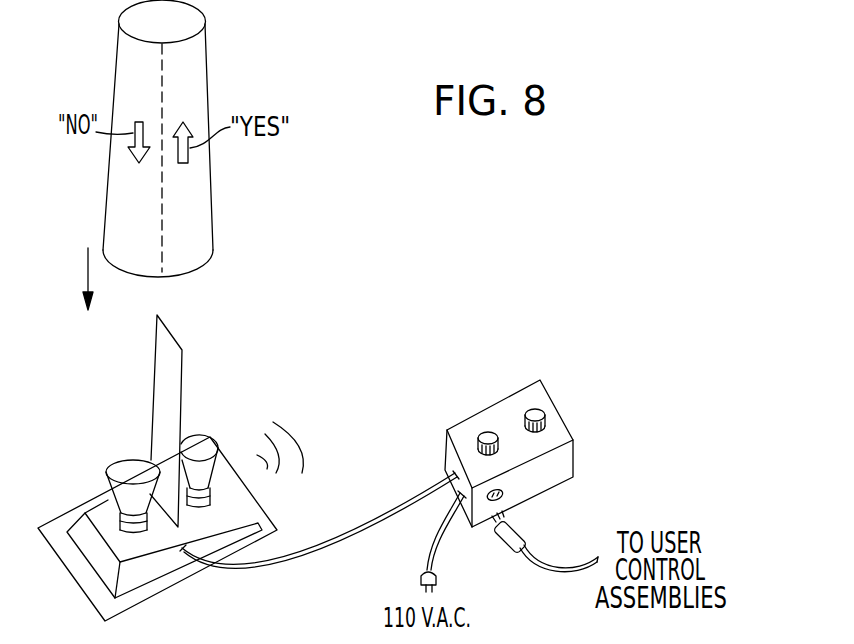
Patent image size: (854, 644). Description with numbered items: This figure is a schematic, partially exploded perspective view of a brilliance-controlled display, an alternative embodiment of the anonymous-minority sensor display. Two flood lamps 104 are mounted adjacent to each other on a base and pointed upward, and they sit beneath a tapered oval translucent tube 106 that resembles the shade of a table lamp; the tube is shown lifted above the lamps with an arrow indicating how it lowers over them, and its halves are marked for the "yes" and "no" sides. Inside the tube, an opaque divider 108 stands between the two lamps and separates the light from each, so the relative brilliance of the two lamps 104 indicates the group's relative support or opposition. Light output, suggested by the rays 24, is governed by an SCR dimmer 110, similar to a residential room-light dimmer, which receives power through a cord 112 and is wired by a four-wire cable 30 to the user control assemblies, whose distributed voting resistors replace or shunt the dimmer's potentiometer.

The signal / sound waves 24 is at (302, 450).
The four-wire cable 30 is at (552, 567).
The lamps 104 is at (115, 457).
The tapered oval translucent tube 106 is at (205, 58).
The opaque divider 108 is at (182, 368).
The SCR dimmer 110 is at (563, 418).
The power cord (110 V.A.C.) 112 is at (438, 537).